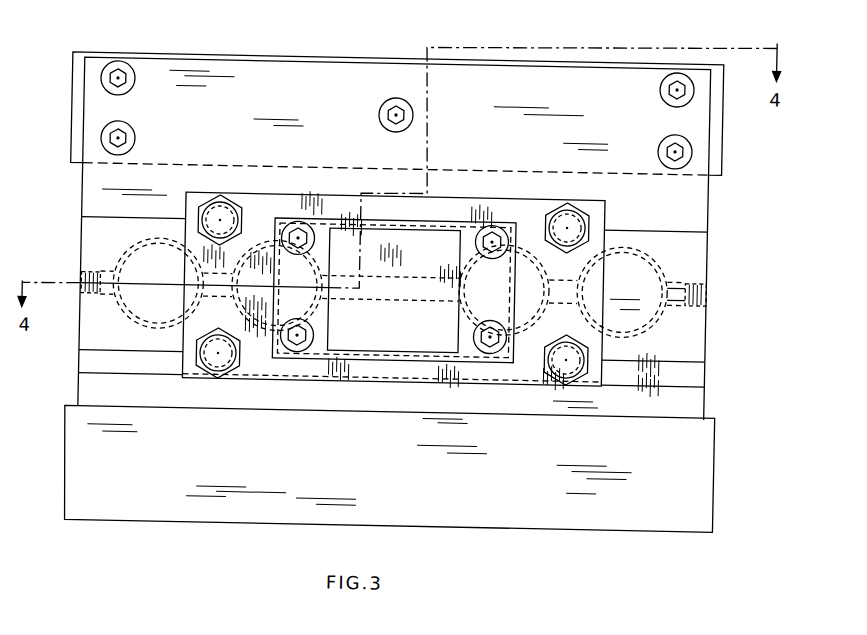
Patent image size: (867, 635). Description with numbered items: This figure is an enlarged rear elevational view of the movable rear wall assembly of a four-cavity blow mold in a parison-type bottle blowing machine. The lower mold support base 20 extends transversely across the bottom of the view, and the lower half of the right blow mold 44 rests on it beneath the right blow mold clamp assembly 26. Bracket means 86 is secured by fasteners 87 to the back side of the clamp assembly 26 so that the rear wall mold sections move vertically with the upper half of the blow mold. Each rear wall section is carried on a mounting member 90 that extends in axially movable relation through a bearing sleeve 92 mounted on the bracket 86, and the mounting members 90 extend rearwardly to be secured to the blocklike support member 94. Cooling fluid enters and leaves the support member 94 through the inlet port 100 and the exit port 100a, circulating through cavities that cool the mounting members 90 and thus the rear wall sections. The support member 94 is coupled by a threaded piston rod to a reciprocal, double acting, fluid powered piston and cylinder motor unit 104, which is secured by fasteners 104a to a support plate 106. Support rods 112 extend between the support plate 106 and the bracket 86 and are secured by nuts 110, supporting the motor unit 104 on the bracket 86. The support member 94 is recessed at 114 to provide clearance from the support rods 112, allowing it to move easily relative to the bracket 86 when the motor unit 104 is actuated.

The lower mold support base 20 is at (176, 498).
The right blow mold clamp assembly 26 is at (66, 124).
The lower half of right blow mold 44 is at (84, 391).
The bracket means 86 is at (82, 364).
The fasteners 87 is at (126, 136).
The mounting member 90 is at (120, 312).
The bearing sleeve 92 is at (125, 328).
The support member 94 is at (80, 231).
The inlet port 100 is at (82, 281).
The exit port 100a is at (705, 290).
The piston and cylinder motor unit 104 is at (411, 348).
The fasteners 104a is at (312, 232).
The support plate 106 is at (318, 196).
The nuts 110 is at (206, 205).
The support rods 112 is at (229, 212).
The recess 114 is at (262, 222).